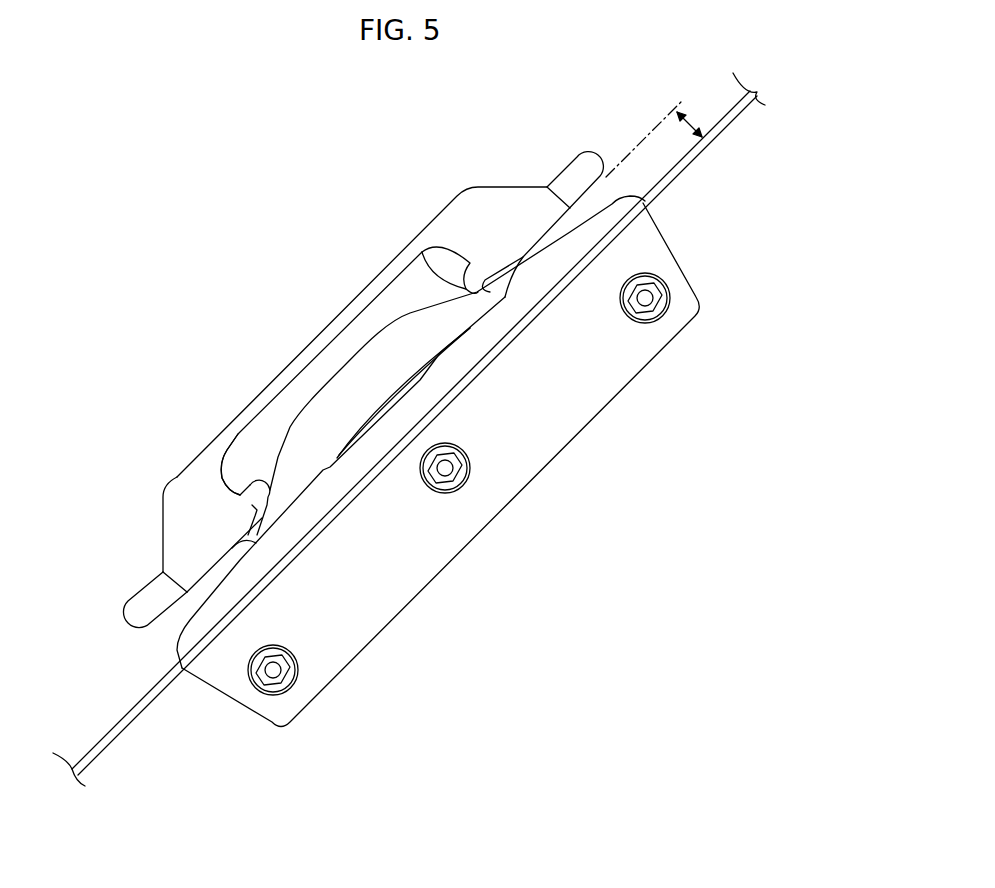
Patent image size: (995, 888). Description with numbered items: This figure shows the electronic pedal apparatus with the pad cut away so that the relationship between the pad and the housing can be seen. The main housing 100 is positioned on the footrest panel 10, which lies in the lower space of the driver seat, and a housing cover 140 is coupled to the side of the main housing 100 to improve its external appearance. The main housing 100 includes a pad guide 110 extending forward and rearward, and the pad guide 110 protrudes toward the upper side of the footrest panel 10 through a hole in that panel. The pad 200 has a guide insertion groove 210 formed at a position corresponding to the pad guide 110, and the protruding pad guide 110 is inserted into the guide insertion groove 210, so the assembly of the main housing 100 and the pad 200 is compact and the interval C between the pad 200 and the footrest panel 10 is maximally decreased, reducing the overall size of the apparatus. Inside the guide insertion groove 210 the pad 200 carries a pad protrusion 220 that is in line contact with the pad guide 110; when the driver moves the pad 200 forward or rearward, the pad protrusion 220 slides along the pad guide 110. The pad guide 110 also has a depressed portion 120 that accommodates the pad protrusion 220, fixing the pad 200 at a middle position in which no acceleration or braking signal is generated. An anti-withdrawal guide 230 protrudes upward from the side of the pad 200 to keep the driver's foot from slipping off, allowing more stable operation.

The footrest panel 10 is at (137, 702).
The main housing 100 is at (233, 584).
The pad guide 110 is at (345, 383).
The depressed portion 120 is at (267, 452).
The housing cover 140 is at (458, 540).
The pad 200 is at (458, 193).
The guide insertion groove 210 is at (390, 310).
The pad protrusion 220 is at (460, 280).
The anti-withdrawal guide 230 is at (177, 477).
The interval C is at (655, 138).